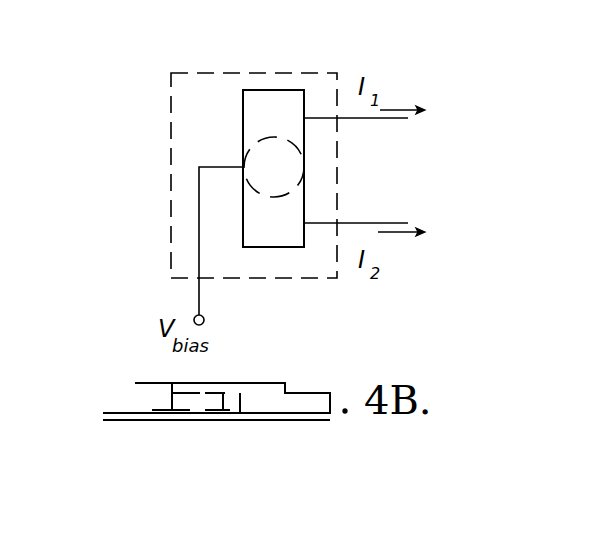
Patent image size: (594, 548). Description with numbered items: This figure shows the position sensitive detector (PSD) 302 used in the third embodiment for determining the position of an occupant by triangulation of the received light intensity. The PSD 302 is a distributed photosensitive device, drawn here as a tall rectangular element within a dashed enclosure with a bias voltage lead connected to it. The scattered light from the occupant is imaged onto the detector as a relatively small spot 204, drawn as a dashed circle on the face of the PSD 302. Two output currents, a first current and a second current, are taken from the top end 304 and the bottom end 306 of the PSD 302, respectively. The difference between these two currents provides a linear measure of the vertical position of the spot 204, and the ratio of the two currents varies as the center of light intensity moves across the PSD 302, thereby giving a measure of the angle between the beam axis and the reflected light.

The position sensitive detector (PSD) 302 is at (171, 141).
The top end 304 is at (283, 92).
The spot 204 is at (304, 190).
The bottom end 306 is at (288, 248).